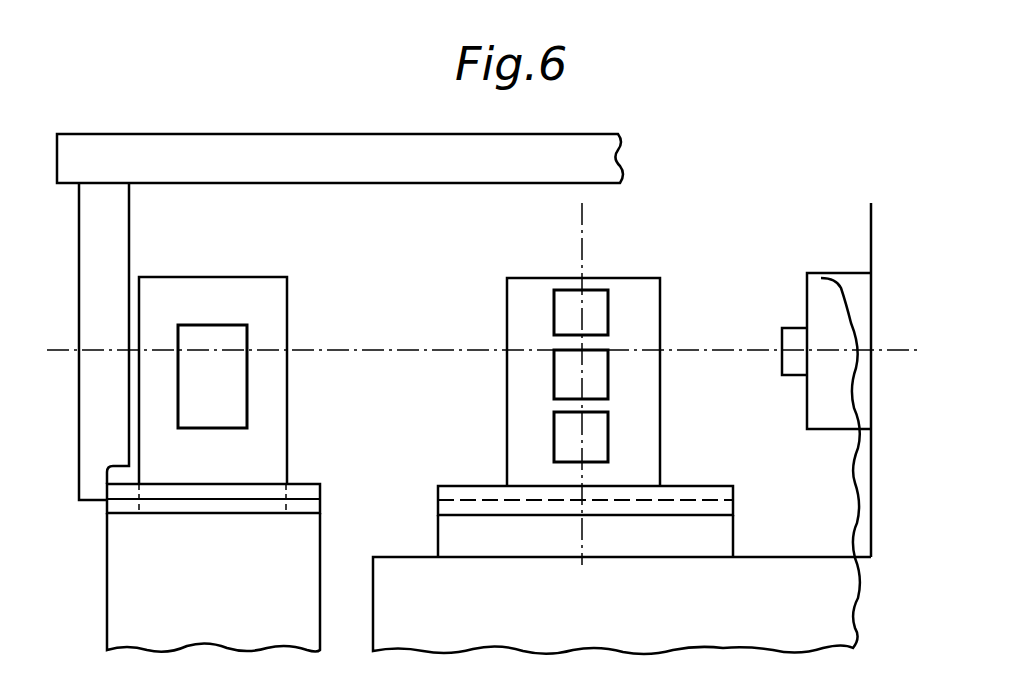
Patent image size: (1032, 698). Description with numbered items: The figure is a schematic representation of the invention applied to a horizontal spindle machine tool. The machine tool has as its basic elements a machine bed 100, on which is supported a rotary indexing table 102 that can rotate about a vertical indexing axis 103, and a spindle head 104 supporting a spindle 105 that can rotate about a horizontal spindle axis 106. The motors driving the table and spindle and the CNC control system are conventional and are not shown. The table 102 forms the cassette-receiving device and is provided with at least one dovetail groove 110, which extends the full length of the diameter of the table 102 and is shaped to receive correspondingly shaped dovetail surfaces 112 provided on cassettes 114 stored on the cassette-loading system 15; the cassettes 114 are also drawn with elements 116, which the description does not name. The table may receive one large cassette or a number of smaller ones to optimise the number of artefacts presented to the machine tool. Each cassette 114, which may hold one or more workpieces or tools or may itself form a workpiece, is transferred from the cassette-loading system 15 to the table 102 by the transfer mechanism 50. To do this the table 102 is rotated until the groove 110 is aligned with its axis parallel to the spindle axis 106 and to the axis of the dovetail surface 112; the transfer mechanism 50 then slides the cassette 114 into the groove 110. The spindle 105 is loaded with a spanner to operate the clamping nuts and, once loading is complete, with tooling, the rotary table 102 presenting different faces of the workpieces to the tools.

The cassette-loading system 15 is at (107, 578).
The transfer mechanism 50 is at (263, 134).
The machine bed 100 is at (602, 627).
The rotary indexing table 102 is at (733, 508).
The vertical indexing axis 103 is at (583, 238).
The spindle head 104 is at (840, 273).
The spindle 105 is at (797, 328).
The horizontal spindle axis 106 is at (727, 351).
The dovetail groove 110 is at (446, 493).
The dovetail surfaces 112 is at (282, 491).
The cassettes 114 is at (287, 313).
The clamping element 116 is at (240, 393).